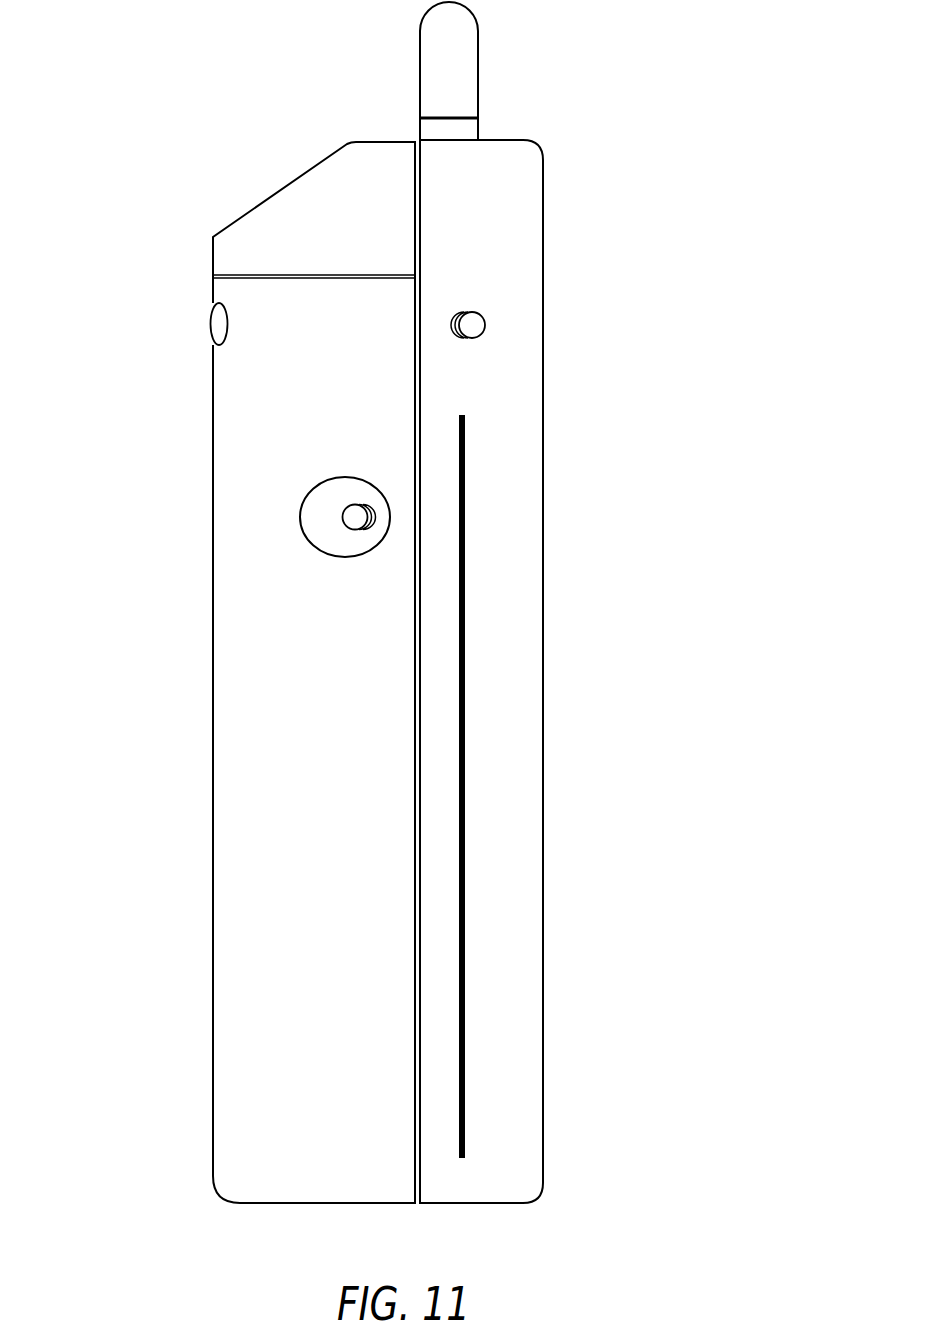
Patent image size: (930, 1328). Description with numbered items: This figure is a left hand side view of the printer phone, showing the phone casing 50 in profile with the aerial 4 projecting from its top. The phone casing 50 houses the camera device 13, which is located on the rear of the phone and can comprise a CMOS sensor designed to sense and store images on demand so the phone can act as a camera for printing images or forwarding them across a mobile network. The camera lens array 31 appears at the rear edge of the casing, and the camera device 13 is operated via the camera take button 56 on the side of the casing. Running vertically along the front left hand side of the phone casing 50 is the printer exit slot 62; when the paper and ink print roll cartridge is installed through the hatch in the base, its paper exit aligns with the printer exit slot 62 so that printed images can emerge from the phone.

The aerial 4 is at (464, 63).
The camera device 13 is at (203, 313).
The camera lens array 31 is at (208, 337).
The phone casing 50 is at (503, 1172).
The camera take button 56 is at (362, 533).
The printer exit slot 62 is at (470, 779).